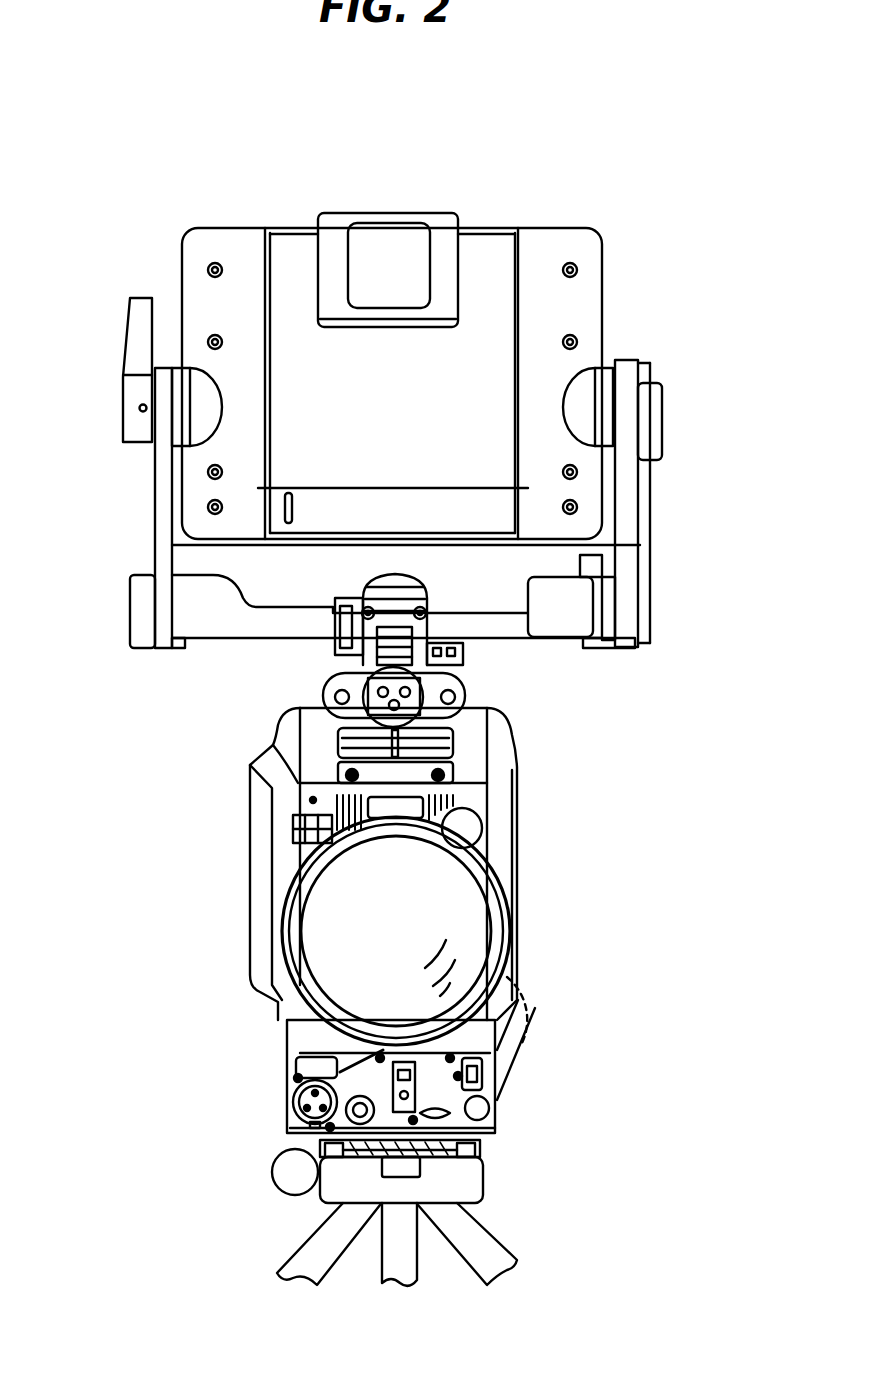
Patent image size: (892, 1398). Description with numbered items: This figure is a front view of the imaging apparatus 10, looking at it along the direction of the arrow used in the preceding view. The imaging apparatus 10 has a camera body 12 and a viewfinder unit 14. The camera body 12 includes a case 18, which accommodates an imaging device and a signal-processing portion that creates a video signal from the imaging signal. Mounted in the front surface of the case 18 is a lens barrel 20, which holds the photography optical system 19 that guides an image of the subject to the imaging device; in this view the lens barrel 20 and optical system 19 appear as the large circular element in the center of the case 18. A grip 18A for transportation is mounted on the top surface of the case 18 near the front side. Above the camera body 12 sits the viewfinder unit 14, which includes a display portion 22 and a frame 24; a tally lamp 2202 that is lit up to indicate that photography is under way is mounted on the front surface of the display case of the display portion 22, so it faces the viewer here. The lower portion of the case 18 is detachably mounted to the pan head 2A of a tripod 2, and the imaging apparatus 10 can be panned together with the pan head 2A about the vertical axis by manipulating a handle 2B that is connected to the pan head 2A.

The imaging apparatus 10 is at (112, 195).
The camera body 12 is at (172, 843).
The viewfinder unit 14 is at (551, 189).
The case 18 is at (518, 822).
The grip 18A is at (396, 572).
The photography optical system 19 is at (323, 965).
The lens barrel 20 is at (493, 955).
The display portion 22 is at (614, 296).
The tally lamp 2202 is at (392, 233).
The frame 24 is at (200, 627).
The tripod 2 is at (478, 1238).
The pan head 2A is at (473, 1178).
The handle 2B is at (277, 1173).